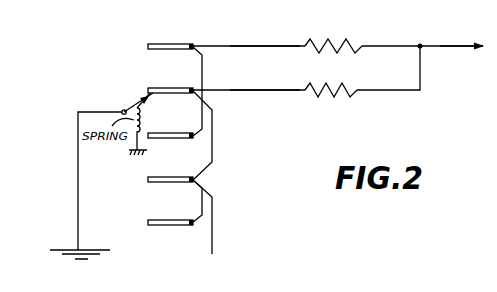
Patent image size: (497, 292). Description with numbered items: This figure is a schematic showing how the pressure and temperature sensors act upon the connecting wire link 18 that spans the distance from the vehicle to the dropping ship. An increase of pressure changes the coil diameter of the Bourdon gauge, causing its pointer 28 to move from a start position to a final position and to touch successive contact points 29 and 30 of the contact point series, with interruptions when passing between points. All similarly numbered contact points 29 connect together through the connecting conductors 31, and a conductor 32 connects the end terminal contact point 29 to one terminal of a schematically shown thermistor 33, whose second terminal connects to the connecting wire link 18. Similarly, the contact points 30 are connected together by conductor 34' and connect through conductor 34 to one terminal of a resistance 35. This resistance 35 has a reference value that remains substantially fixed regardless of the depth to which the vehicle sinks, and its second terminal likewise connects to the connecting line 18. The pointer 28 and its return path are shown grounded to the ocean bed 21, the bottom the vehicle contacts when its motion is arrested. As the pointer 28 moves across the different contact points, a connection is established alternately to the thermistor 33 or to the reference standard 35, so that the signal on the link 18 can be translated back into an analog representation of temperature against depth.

The connecting wire link 18 is at (458, 43).
The ocean bed 21 is at (72, 261).
The pointer 28 is at (131, 107).
The contact points 29 is at (182, 44).
The contact points 30 is at (180, 88).
The connecting conductors 31 is at (203, 77).
The conductor 32 is at (282, 45).
The thermistor 33 is at (321, 48).
The conductor 34 is at (265, 111).
The conductor 34' is at (230, 198).
The resistance 35 is at (352, 84).